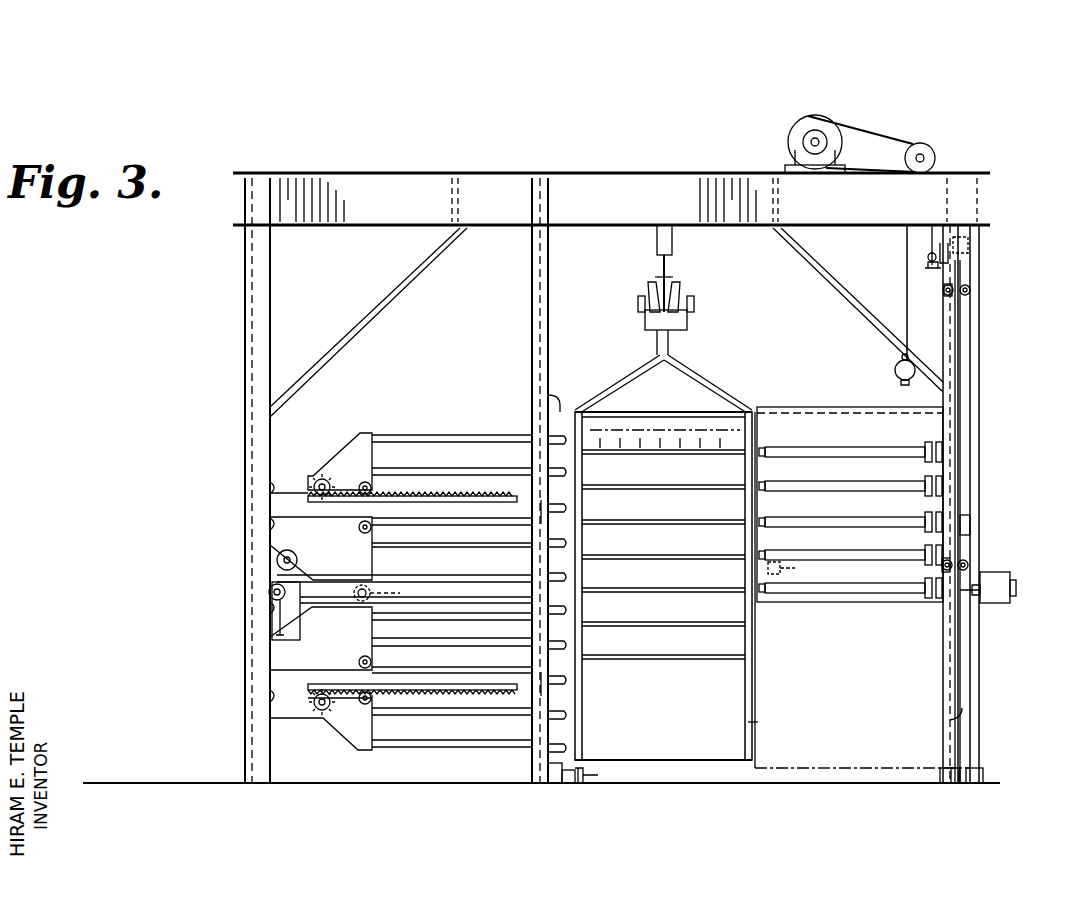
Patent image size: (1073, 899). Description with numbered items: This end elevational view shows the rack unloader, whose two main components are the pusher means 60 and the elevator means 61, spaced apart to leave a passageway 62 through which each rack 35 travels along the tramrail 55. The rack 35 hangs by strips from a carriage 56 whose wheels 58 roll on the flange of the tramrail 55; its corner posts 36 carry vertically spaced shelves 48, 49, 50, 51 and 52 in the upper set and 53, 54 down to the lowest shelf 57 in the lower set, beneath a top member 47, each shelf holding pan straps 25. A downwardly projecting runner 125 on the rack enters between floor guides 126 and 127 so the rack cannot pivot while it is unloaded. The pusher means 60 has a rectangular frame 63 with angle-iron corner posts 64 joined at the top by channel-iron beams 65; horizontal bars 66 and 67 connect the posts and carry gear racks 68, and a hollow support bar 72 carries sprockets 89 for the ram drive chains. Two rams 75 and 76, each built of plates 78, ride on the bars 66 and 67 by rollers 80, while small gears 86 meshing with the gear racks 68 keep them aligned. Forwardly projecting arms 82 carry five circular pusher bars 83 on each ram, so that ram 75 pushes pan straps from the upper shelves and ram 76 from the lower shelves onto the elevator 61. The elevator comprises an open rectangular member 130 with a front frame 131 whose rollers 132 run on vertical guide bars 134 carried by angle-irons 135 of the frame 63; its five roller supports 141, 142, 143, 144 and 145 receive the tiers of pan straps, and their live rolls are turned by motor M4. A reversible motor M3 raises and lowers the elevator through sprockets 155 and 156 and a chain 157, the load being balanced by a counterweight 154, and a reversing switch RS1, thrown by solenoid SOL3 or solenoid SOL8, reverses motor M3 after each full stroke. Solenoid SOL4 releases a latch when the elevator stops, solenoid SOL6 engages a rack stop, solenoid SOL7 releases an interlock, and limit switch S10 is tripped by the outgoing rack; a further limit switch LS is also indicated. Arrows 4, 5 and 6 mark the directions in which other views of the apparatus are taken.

The channel-iron beams 65 is at (392, 192).
The angle-iron corner posts 64 is at (250, 268).
The rectangular frame 63 is at (561, 261).
The shelf 50 is at (238, 336).
The reversible electric motor M3 is at (792, 145).
The sprocket 155 is at (828, 142).
The sprocket 156 is at (920, 143).
The chain 157 is at (888, 138).
The tramrail 55 is at (670, 284).
The wheels 58 is at (648, 283).
The carriage 56 is at (676, 326).
The lower shelf 57 is at (755, 348).
The pan straps 25 is at (700, 430).
The shelf 47 is at (676, 416).
The shelf 48 is at (694, 452).
The shelf 49 is at (652, 492).
The shelf 51 is at (716, 556).
The shelf 52 is at (656, 591).
The shelf 53 is at (728, 624).
The shelf 54 is at (684, 658).
The rack 35 is at (766, 681).
The corner posts 36 is at (562, 380).
The passageway 62 is at (739, 784).
The pusher bars 83 is at (568, 610).
The open rectangular member 130 is at (825, 382).
The roller support 141 is at (908, 449).
The roller support 142 is at (900, 482).
The roller support 143 is at (900, 516).
The roller support 144 is at (892, 550).
The roller support 145 is at (874, 590).
The limit switch LS is at (798, 570).
The elevator means 61 is at (971, 419).
The rectangular front frame 131 is at (960, 390).
The vertical guide bars 134 is at (958, 348).
The angle-irons 135 is at (960, 724).
The rollers 132 is at (972, 298).
The solenoid SOL3 is at (968, 250).
The solenoid SOL4 is at (965, 515).
The counterweight 154 is at (896, 376).
The live roll motor M4 is at (980, 606).
The reversing switch RS1 is at (1010, 588).
The section arrow 5 is at (1016, 475).
The section line 4 is at (575, 478).
The section line 6 is at (295, 845).
The pusher means 60 is at (448, 425).
The upper pusher element 75 is at (378, 425).
The lower pusher element 76 is at (393, 766).
The plates 78 is at (362, 418).
The small gears 86 is at (314, 472).
The gear rack 68 is at (460, 490).
The arms 82 is at (493, 470).
The rollers 80 is at (275, 510).
The horizontal bar 66 is at (344, 526).
The horizontal bar 67 is at (332, 670).
The hollow support bar 72 is at (477, 585).
The sprocket 89 is at (395, 590).
The runner 125 is at (592, 775).
The guide 126 is at (572, 790).
The guide 127 is at (578, 785).
The solenoid SOL7 is at (552, 788).
The solenoid SOL6 is at (548, 788).
The limit switch S10 is at (552, 790).
The solenoid SOL8 is at (960, 802).